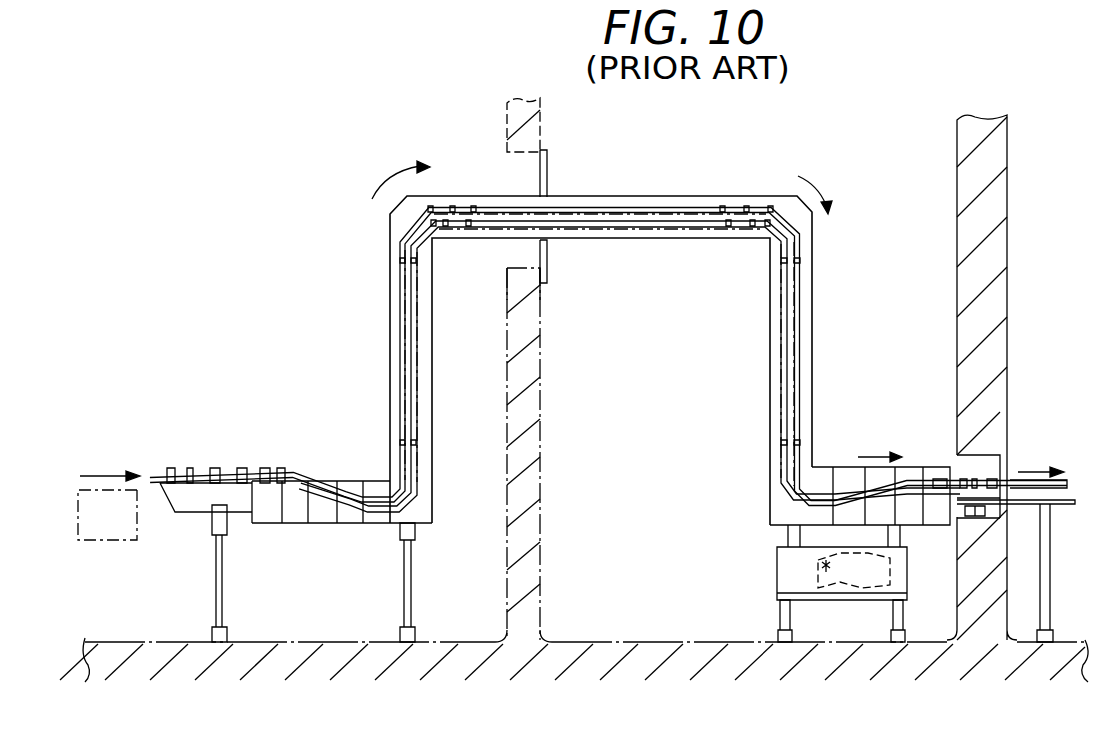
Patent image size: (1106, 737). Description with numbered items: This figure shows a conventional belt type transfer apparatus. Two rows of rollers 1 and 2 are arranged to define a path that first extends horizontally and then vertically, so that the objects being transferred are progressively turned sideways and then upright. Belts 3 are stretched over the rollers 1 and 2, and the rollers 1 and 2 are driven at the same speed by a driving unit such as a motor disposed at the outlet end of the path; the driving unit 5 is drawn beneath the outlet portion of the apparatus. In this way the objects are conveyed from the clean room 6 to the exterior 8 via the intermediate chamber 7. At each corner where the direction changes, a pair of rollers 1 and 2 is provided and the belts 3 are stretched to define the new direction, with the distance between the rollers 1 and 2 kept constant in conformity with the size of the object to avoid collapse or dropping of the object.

The roller 1 is at (475, 208).
The roller 2 is at (470, 226).
The belt 3 is at (400, 400).
The drive unit 5 is at (792, 572).
The clean room 6 is at (458, 626).
The intermediate chamber 7 is at (612, 622).
The exterior 8 is at (1052, 566).